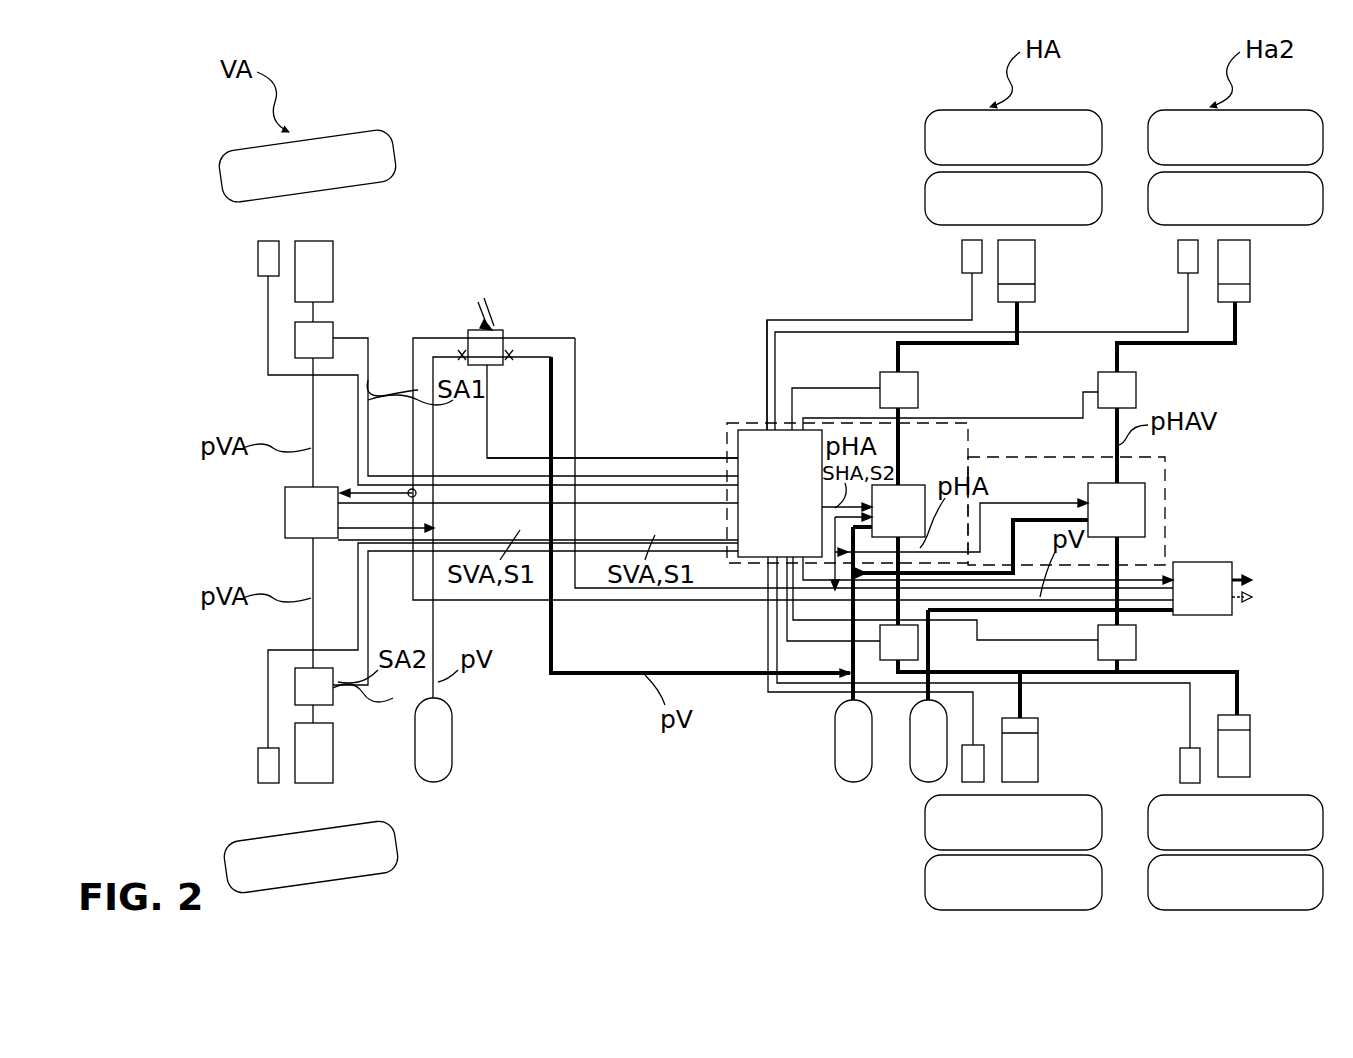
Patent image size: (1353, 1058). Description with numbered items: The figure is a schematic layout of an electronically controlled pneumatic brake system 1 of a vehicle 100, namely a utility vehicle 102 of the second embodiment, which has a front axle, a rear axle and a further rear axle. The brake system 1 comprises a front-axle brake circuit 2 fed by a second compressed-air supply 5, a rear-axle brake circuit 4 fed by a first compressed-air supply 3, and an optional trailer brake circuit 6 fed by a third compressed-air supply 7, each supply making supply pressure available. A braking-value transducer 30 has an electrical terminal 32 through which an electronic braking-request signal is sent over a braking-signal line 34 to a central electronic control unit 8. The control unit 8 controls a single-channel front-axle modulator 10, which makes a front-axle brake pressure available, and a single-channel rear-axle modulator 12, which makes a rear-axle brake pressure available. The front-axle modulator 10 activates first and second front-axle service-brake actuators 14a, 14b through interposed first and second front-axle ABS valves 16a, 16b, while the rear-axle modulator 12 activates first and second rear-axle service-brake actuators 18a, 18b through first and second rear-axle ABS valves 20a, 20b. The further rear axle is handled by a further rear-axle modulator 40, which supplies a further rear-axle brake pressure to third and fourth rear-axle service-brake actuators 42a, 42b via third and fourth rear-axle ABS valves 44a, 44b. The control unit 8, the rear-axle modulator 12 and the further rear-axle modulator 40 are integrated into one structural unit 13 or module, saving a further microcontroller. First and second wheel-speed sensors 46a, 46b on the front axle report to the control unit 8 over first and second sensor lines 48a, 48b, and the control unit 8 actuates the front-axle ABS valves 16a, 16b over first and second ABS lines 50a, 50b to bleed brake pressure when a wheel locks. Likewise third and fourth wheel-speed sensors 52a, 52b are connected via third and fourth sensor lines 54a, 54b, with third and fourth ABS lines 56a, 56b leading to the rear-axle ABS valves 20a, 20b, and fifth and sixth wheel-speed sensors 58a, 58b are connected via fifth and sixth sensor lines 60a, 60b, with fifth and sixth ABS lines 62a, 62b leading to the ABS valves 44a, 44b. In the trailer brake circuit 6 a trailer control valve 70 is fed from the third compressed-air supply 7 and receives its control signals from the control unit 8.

The vehicle 100 is at (687, 493).
The utility vehicle 102 is at (187, 152).
The electronically controlled pneumatic brake system 1 is at (470, 197).
The front-axle brake circuit 2 is at (475, 768).
The first compressed-air supply 3 is at (831, 654).
The rear-axle brake circuit 4 is at (750, 802).
The second compressed-air supply 5 is at (455, 730).
The trailer brake circuit 6 is at (1275, 640).
The third compressed-air supply 7 is at (913, 722).
The central electronic control unit 8 is at (735, 430).
The front-axle modulator 10 is at (285, 520).
The rear-axle modulator 12 is at (905, 488).
The structural unit 13 is at (1166, 473).
The first front-axle service-brake actuator 14a is at (320, 273).
The second front-axle service-brake actuator 14b is at (333, 764).
The first front-axle ABS valve 16a is at (333, 324).
The second front-axle ABS valve 16b is at (295, 701).
The first rear-axle service-brake actuator 18a is at (1035, 244).
The second rear-axle service-brake actuator 18b is at (1038, 745).
The first rear-axle ABS valve 20a is at (918, 385).
The second rear-axle ABS valve 20b is at (918, 650).
The braking-value transducer 30 is at (495, 320).
The electrical terminal 32 is at (490, 365).
The braking-signal line 34 is at (645, 455).
The further rear-axle modulator 40 is at (1145, 510).
The third rear-axle service-brake actuator 42a is at (1252, 275).
The fourth rear-axle service-brake actuator 42b is at (1250, 740).
The third rear-axle ABS valve 44a is at (1135, 388).
The fourth rear-axle ABS valve 44b is at (1135, 644).
The first wheel-speed sensor 46a is at (258, 266).
The second wheel-speed sensor 46b is at (258, 777).
The first sensor line 48a is at (268, 337).
The second sensor line 48b is at (268, 665).
The first ABS line 50a is at (405, 362).
The second ABS line 50b is at (375, 690).
The third wheel-speed sensor 52a is at (962, 254).
The fourth wheel-speed sensor 52b is at (965, 785).
The third sensor line 54a is at (972, 302).
The fourth sensor line 54b is at (770, 705).
The third ABS line 56a is at (792, 412).
The fourth ABS line 56b is at (795, 643).
The fifth wheel-speed sensor 58a is at (1178, 260).
The sixth wheel-speed sensor 58b is at (1181, 775).
The fifth sensor line 60a is at (1092, 332).
The sixth sensor line 60b is at (1165, 685).
The fifth ABS line 62a is at (1047, 417).
The sixth ABS line 62b is at (1020, 650).
The trailer control valve 70 is at (1223, 560).